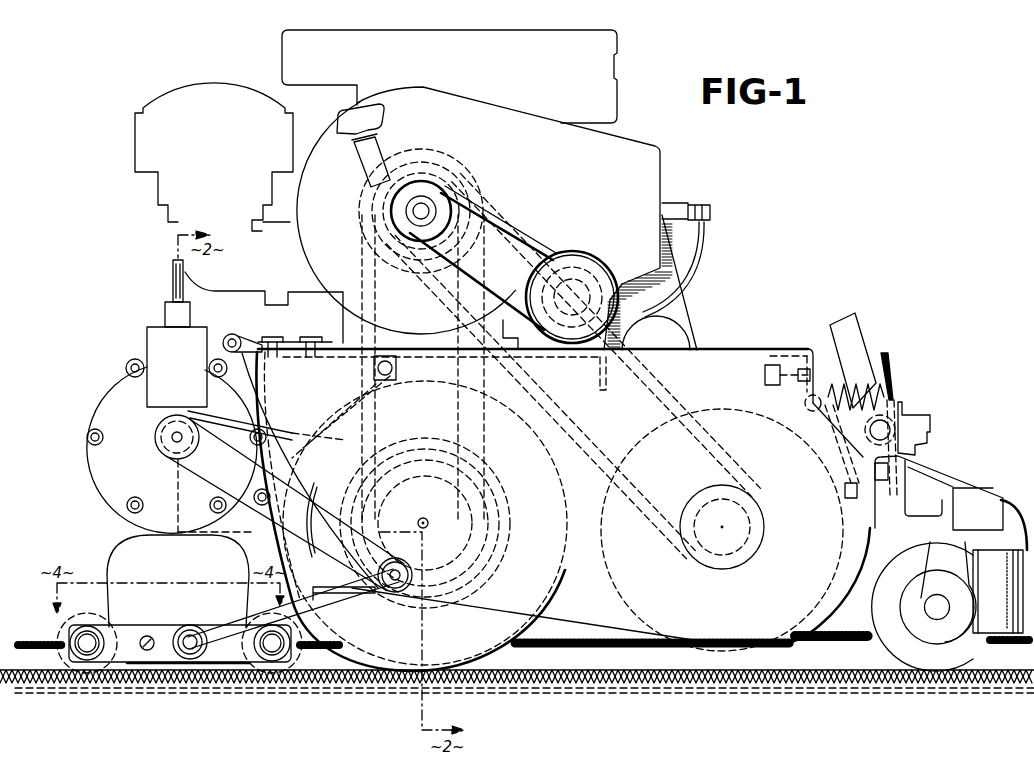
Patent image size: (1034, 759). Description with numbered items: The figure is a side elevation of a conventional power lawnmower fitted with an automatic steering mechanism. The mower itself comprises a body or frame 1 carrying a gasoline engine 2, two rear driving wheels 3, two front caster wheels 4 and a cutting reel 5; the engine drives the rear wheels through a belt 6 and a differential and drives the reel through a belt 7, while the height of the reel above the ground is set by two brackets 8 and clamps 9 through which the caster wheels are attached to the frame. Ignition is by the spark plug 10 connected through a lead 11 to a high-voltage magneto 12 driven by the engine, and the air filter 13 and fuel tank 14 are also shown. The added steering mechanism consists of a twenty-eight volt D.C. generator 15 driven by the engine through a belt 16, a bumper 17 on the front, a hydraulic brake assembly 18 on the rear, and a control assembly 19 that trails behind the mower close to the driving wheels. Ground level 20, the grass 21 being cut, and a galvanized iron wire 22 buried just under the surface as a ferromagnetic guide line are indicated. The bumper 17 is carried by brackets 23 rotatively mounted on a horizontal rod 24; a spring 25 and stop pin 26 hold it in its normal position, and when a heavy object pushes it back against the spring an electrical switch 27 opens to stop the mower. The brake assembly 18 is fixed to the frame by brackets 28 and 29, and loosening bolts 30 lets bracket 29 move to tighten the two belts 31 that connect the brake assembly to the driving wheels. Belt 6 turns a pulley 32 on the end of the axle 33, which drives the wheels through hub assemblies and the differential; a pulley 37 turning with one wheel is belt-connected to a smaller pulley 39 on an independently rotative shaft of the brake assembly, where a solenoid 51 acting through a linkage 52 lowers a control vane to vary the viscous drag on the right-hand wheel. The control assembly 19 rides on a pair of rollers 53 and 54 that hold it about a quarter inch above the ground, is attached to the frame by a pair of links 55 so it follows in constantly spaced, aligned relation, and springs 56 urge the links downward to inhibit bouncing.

The frame 1 is at (718, 350).
The gasoline engine 2 is at (655, 147).
The rear driving wheels 3 is at (487, 655).
The front caster wheels 4 is at (898, 565).
The cutting reel 5 is at (797, 622).
The belt 6 is at (472, 410).
The belt 7 is at (585, 444).
The brackets 8 is at (856, 335).
The clamps 9 is at (895, 413).
The spark plug 10 is at (672, 205).
The lead 11 is at (700, 254).
The high-voltage magneto 12 is at (675, 323).
The air filter 13 is at (178, 93).
The fuel tank 14 is at (618, 56).
The D.C. generator 15 is at (597, 256).
The belt 16 is at (548, 246).
The bumper 17 is at (983, 633).
The hydraulic brake assembly 18 is at (112, 380).
The control assembly 19 is at (120, 548).
The ground level 20 is at (22, 665).
The grass 21 is at (575, 652).
The galvanized iron wire 22 is at (626, 692).
The brackets 23 is at (920, 469).
The rod 24 is at (905, 415).
The spring 25 is at (882, 376).
The stop pin 26 is at (862, 352).
The electrical switch 27 is at (848, 486).
The bracket 28 is at (347, 402).
The bracket 29 is at (250, 340).
The bolts 30 is at (312, 334).
The belts 31 is at (236, 425).
The pulley 32 is at (405, 466).
The axle 33 is at (423, 516).
The pulley 37 is at (355, 478).
The pulley 39 is at (160, 453).
The solenoid 51 is at (187, 376).
The linkage 52 is at (175, 272).
The roller 53 is at (98, 624).
The roller 54 is at (262, 670).
The links 55 is at (362, 592).
The springs 56 is at (362, 600).